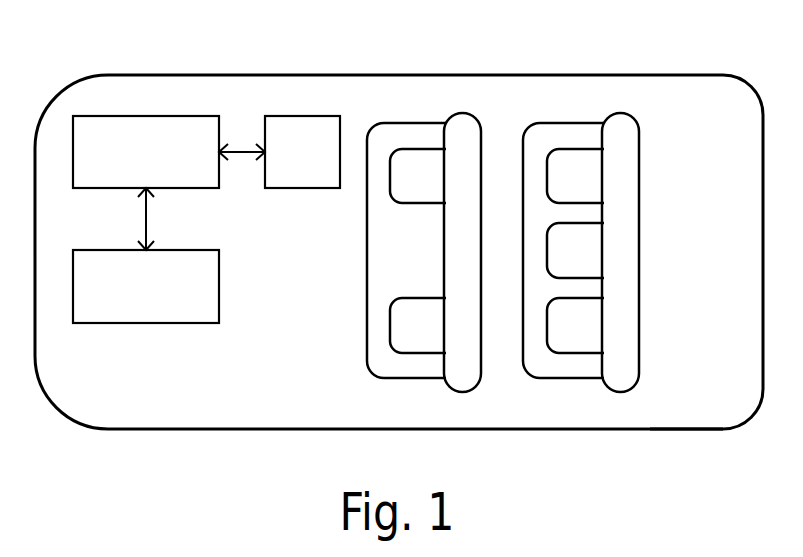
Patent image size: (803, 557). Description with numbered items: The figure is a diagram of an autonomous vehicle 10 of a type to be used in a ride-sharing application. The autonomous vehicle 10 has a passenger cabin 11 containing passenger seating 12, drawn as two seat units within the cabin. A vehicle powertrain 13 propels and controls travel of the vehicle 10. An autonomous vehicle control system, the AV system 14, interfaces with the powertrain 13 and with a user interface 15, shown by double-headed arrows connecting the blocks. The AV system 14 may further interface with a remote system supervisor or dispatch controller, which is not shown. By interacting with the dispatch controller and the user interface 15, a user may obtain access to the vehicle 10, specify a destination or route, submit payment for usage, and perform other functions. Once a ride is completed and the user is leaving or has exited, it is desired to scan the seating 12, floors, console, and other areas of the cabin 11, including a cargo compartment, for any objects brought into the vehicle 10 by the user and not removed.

The autonomous vehicle 10 is at (543, 75).
The passenger cabin 11 is at (689, 412).
The passenger seating 12 is at (418, 379).
The vehicle powertrain 13 is at (182, 323).
The autonomous vehicle (AV) control system 14 is at (173, 115).
The user interface 15 is at (285, 115).